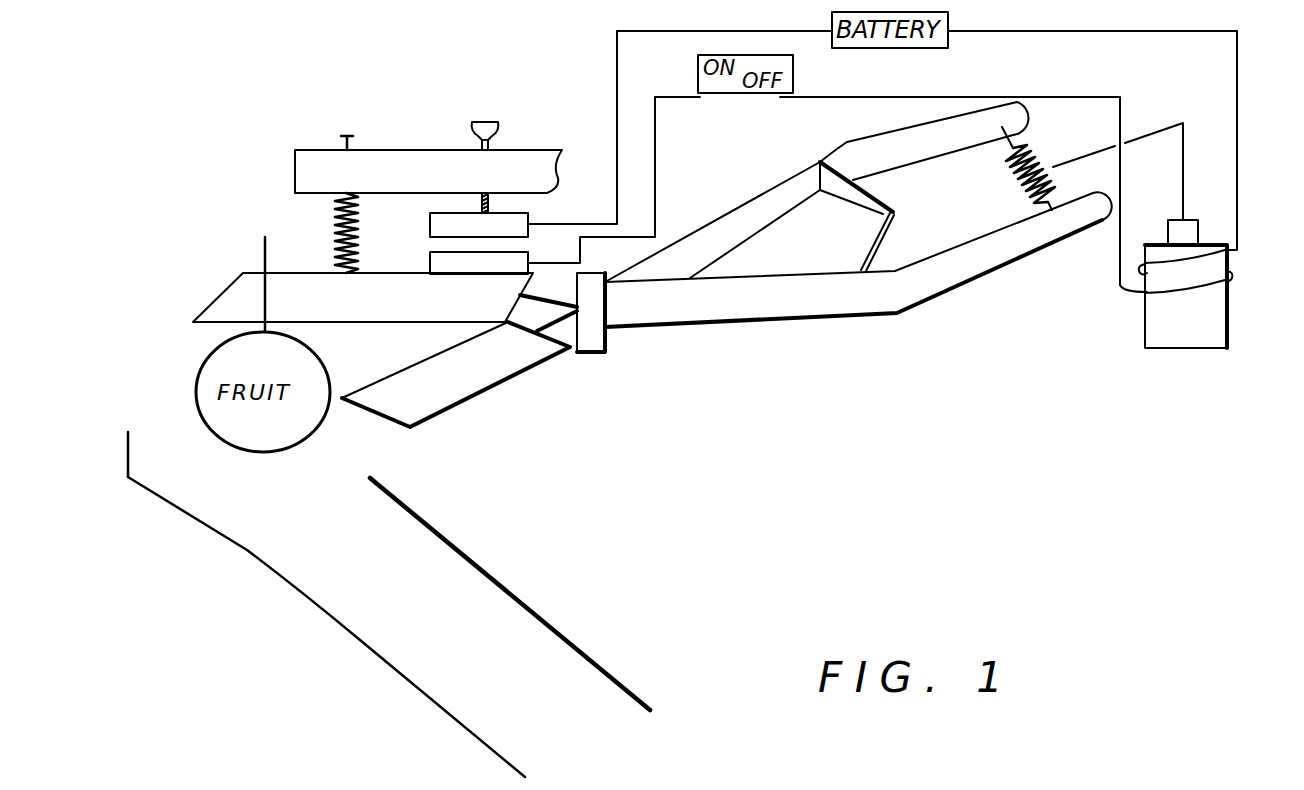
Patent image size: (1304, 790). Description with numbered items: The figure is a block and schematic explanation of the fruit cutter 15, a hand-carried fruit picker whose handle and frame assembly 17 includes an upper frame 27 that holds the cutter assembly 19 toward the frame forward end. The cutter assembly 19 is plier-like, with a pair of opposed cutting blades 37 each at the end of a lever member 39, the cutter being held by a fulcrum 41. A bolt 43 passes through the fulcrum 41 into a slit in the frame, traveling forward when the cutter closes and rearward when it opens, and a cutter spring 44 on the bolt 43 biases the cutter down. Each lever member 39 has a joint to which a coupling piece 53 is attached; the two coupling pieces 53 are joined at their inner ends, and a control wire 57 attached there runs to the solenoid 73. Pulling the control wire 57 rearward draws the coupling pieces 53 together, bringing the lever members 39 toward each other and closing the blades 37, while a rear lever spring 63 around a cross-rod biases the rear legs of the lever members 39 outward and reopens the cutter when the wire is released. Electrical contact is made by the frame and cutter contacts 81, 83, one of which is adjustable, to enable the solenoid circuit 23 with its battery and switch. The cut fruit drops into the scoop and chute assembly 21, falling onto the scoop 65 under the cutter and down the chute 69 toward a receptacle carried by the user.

The fruit cutter 15 is at (492, 66).
The handle and frame assembly 17 is at (408, 140).
The upper frame 27 is at (315, 165).
The bolt 43 is at (347, 133).
The cutter spring 44 is at (335, 225).
The cutter contact 83 is at (430, 225).
The frame contact 81 is at (430, 263).
The cutting blades 37 is at (456, 309).
The cutter assembly 19 is at (487, 383).
The fulcrum 41 is at (587, 347).
The lever members 39 is at (897, 312).
The coupling pieces 53 is at (880, 213).
The lever spring 63 is at (1013, 160).
The control wire 57 is at (1183, 165).
The solenoid 73 is at (1148, 327).
The solenoid circuit 23 is at (1175, 309).
The scoop and chute assembly 21 is at (314, 578).
The scoop 65 is at (178, 448).
The chute 69 is at (568, 729).